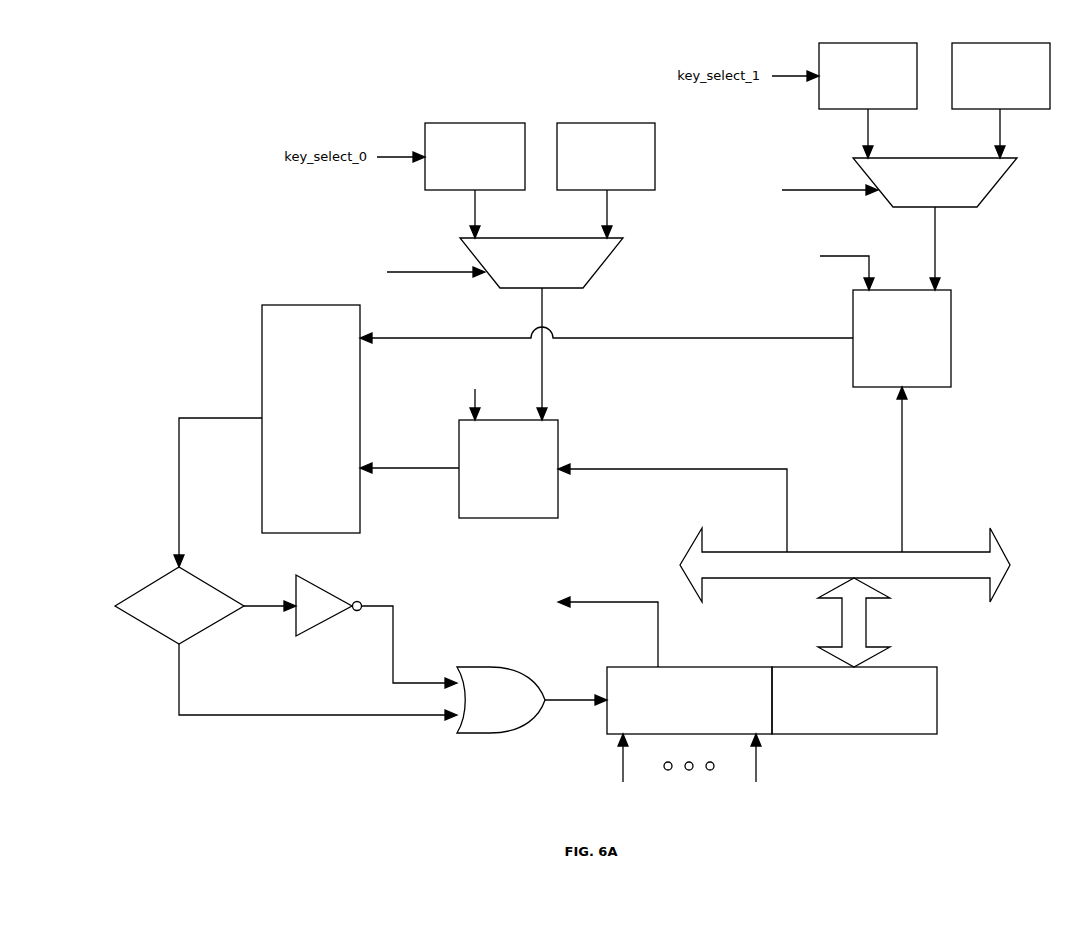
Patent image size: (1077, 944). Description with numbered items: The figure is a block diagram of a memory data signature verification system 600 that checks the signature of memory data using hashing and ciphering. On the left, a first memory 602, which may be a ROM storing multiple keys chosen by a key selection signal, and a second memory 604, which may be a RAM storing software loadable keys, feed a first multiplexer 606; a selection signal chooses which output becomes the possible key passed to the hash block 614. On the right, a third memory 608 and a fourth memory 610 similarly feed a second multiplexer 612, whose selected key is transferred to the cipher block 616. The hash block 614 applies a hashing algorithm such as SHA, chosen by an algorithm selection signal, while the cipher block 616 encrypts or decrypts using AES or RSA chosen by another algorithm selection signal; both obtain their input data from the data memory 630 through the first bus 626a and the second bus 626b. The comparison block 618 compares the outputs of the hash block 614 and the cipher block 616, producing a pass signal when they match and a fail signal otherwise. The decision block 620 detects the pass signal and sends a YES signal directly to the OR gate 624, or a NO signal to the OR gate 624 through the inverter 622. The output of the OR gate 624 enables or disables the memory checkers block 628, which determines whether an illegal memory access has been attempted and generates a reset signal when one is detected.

The memory data signature verification system 600 is at (158, 84).
The first memory (memory_0a) 602 is at (485, 123).
The second memory (memory_0b) 604 is at (615, 123).
The first multiplexer (MUX_0) 606 is at (598, 272).
The third memory (memory_1a) 608 is at (878, 43).
The fourth memory (memory_1b) 610 is at (1010, 43).
The second multiplexer (MUX_1) 612 is at (992, 190).
The hash block 614 is at (558, 436).
The cipher block 616 is at (951, 338).
The comparison block 618 is at (360, 390).
The decision block 620 is at (194, 574).
The inverter 622 is at (330, 593).
The OR gate 624 is at (530, 682).
The first bus 626a is at (905, 578).
The second bus 626b is at (866, 620).
The memory checkers block 628 is at (735, 667).
The data memory 630 is at (858, 734).